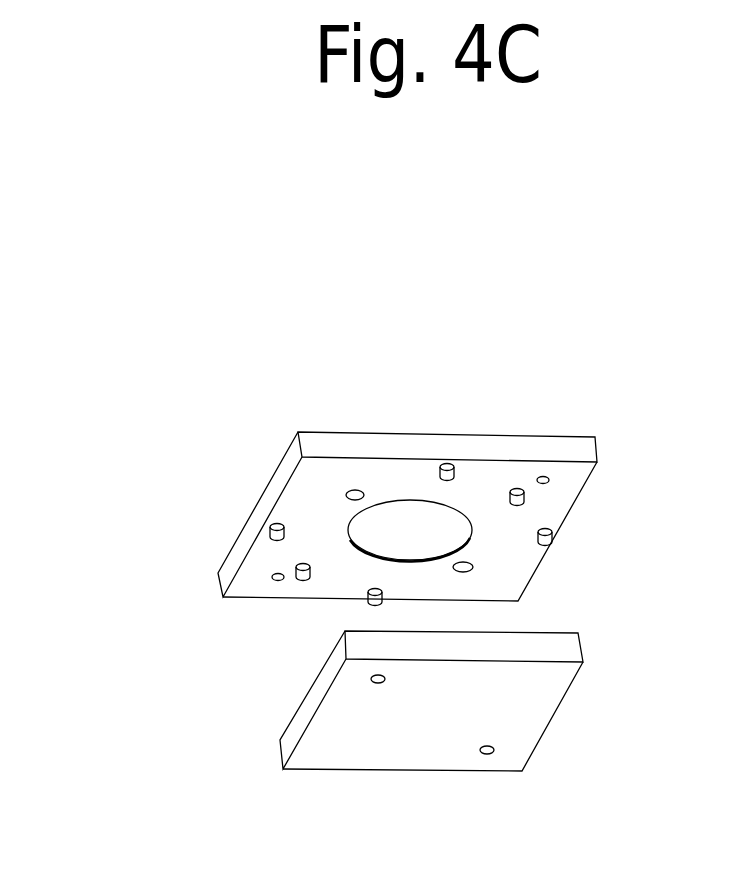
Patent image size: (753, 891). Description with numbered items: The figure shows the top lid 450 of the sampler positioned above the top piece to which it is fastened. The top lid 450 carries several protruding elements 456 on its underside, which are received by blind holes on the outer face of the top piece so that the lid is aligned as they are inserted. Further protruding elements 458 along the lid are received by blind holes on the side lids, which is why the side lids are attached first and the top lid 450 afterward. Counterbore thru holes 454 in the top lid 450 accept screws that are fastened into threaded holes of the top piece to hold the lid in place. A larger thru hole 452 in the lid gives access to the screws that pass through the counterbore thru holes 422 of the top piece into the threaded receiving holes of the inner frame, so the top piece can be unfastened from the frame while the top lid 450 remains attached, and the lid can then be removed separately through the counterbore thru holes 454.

The top lid 450 is at (238, 549).
The thru holes 452 is at (351, 488).
The counterbore thru holes 454 is at (546, 475).
The protruding elements 456 is at (514, 489).
The protruding elements 458 is at (448, 465).
The counterbore thru holes 422 is at (373, 687).